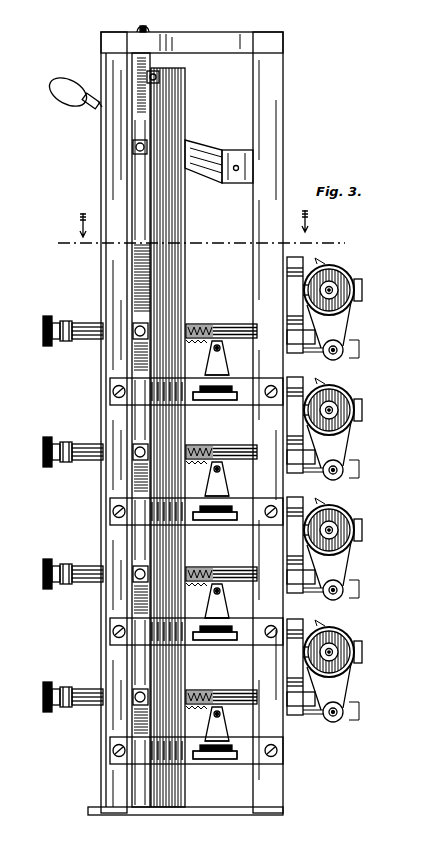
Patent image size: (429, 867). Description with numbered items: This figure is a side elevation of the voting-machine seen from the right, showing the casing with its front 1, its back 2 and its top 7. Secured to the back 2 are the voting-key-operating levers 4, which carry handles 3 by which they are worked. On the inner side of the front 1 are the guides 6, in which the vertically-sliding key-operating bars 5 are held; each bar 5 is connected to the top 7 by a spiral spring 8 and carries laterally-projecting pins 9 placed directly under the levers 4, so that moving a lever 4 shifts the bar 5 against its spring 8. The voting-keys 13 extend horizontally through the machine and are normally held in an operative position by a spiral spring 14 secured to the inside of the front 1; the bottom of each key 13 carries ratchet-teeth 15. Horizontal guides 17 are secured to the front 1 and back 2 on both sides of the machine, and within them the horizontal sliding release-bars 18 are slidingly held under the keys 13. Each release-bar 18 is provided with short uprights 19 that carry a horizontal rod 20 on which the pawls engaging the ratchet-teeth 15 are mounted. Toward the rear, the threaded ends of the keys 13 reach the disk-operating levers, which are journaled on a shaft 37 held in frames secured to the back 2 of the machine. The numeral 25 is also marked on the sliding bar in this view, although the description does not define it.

The front 1 is at (117, 292).
The back 2 is at (285, 170).
The handles 3 is at (76, 80).
The voting-key-operating levers 4 is at (196, 152).
The vertically-sliding key-operating bars 5 is at (133, 487).
The guides 6 is at (152, 283).
The top 7 is at (195, 139).
The spiral spring 8 is at (137, 90).
The laterally-projecting pins 9 is at (130, 147).
The voting-keys 13 is at (230, 323).
The spiral spring 14 is at (200, 323).
The ratchet-teeth 15 is at (173, 528).
The horizontal guides 17 is at (196, 571).
The horizontal sliding release-bars 18 is at (193, 394).
The short uprights 19 is at (230, 368).
The horizontal rod 20 is at (223, 353).
The slide bar 25 is at (168, 437).
The shaft 37 is at (335, 284).